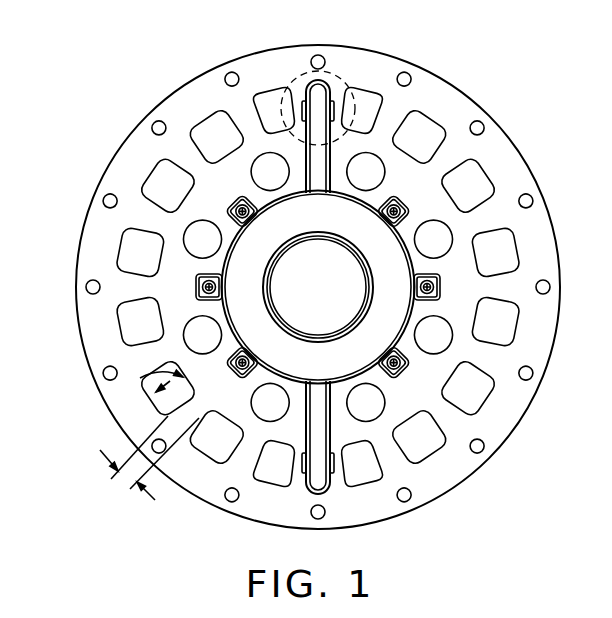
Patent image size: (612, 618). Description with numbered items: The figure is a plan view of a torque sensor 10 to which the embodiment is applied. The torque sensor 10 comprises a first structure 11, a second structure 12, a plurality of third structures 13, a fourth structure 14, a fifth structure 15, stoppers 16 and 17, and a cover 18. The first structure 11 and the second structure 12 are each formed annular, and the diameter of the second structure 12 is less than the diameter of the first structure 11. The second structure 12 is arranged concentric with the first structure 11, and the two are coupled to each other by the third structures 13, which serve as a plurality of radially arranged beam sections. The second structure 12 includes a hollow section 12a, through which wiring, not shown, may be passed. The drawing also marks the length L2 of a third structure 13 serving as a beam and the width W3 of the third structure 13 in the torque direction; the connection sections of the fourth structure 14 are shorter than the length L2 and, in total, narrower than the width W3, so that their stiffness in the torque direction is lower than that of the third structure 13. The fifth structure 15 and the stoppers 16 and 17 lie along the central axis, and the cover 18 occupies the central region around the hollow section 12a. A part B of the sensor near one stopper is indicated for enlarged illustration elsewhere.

The torque sensor 10 is at (347, 46).
The first structure 11 is at (133, 153).
The second structure 12 is at (180, 260).
The hollow section 12a is at (300, 299).
The third structures 13 is at (153, 357).
The fourth structure 14 is at (341, 81).
The fifth structure 15 is at (342, 479).
The stopper 16 is at (318, 163).
The stopper 17 is at (320, 430).
The cover 18 is at (388, 252).
The part B is at (293, 80).
The length L2 is at (140, 378).
The width W3 is at (137, 462).